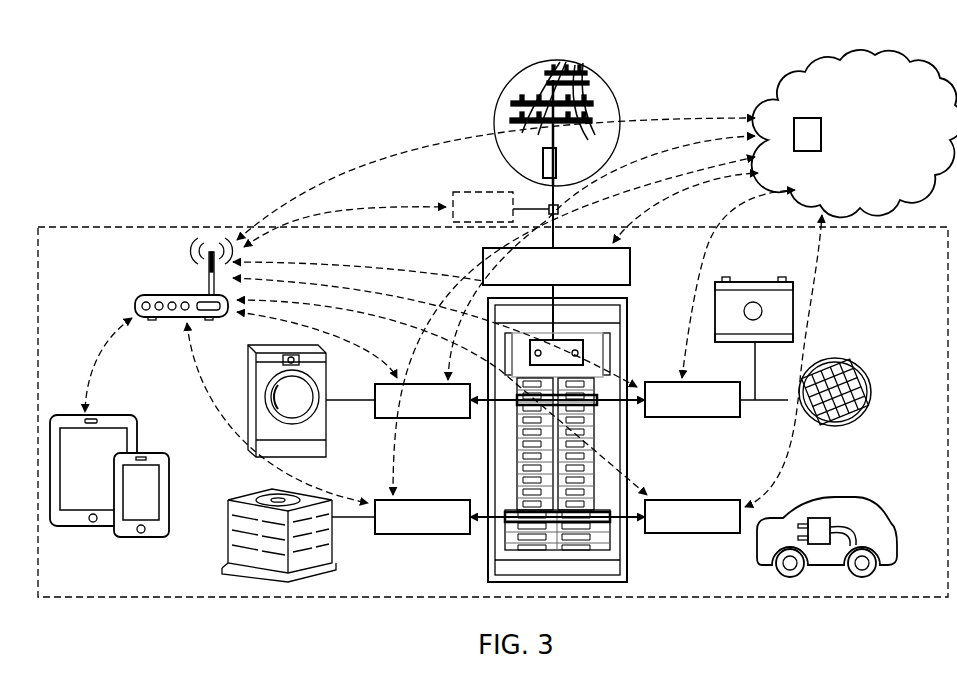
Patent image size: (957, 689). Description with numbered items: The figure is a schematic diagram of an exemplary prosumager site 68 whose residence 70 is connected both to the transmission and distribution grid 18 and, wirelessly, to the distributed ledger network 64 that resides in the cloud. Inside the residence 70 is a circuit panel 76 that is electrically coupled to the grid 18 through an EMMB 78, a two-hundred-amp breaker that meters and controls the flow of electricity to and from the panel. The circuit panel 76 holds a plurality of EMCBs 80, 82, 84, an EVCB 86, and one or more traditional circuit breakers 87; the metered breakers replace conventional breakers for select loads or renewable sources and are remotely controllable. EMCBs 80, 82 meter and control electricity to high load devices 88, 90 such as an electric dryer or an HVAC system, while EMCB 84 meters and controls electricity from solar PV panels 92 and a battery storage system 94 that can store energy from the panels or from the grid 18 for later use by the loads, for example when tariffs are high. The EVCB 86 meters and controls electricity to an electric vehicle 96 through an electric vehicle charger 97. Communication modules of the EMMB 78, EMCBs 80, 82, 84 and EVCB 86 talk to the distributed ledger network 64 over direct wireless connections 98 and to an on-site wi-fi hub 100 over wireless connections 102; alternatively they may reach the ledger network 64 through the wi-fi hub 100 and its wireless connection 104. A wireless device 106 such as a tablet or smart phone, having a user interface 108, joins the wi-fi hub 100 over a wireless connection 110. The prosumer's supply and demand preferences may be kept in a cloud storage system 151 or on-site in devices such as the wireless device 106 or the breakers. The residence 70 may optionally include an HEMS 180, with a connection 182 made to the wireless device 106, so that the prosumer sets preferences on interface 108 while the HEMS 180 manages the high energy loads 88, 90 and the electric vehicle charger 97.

The transmission and distribution grid 18 is at (523, 69).
The distributed ledger network 64 is at (893, 57).
The cloud storage system 151 is at (805, 118).
The prosumager site 68 is at (215, 171).
The residence 70 is at (130, 226).
The circuit panel 76 is at (561, 440).
The EMMB 78 is at (631, 268).
The EMCB 80 is at (434, 418).
The EMCB 82 is at (420, 534).
The EMCB 84 is at (693, 418).
The EVCB 86 is at (693, 500).
The traditional circuit breakers 87 is at (512, 468).
The high load device 88 is at (249, 392).
The high load device 90 is at (226, 515).
The solar PV panels 92 is at (840, 360).
The battery storage system 94 is at (755, 282).
The electric vehicle 96 is at (831, 518).
The electric vehicle charger 97 is at (820, 527).
The wireless connections 98 is at (637, 165).
The wi-fi hub 100 is at (182, 295).
The wireless connections 102 is at (327, 300).
The wireless connection 104 is at (400, 158).
The wireless device 106 is at (110, 479).
The user interface 108 is at (133, 508).
The wireless connection 110 is at (98, 362).
The HEMS or BEMS 180 is at (472, 191).
The connection 182 is at (400, 205).